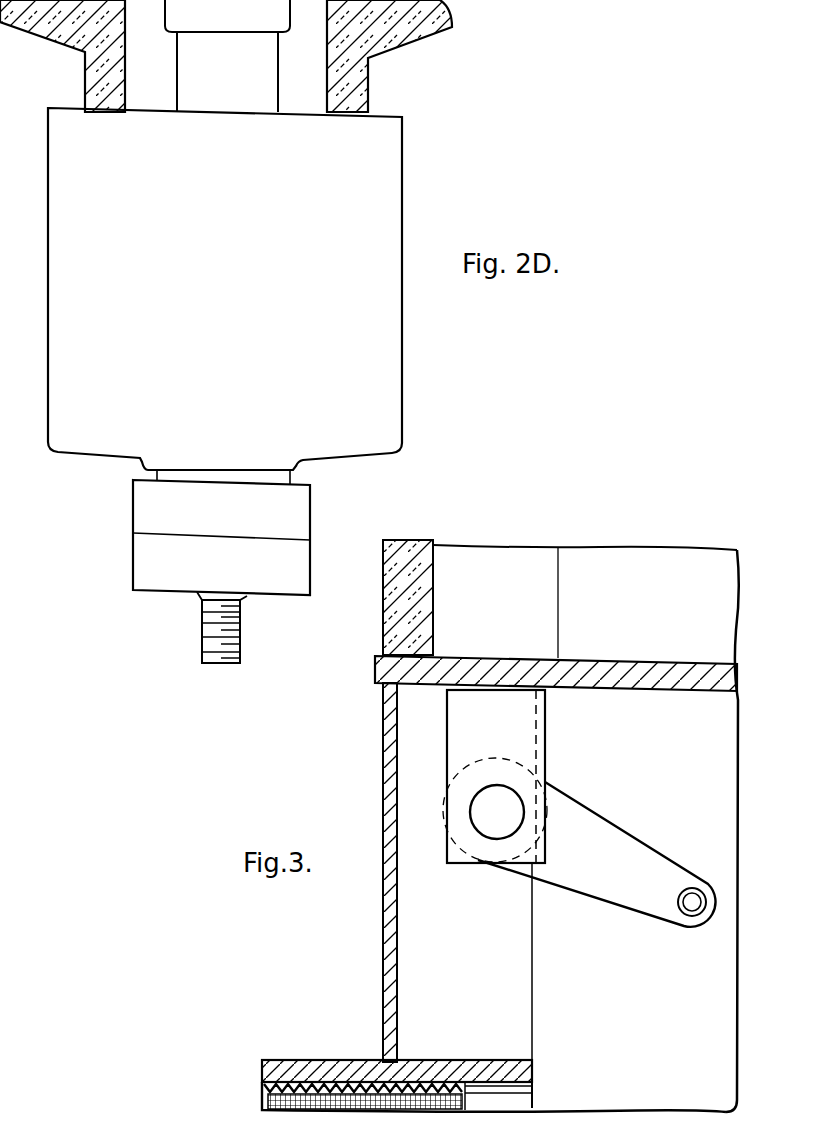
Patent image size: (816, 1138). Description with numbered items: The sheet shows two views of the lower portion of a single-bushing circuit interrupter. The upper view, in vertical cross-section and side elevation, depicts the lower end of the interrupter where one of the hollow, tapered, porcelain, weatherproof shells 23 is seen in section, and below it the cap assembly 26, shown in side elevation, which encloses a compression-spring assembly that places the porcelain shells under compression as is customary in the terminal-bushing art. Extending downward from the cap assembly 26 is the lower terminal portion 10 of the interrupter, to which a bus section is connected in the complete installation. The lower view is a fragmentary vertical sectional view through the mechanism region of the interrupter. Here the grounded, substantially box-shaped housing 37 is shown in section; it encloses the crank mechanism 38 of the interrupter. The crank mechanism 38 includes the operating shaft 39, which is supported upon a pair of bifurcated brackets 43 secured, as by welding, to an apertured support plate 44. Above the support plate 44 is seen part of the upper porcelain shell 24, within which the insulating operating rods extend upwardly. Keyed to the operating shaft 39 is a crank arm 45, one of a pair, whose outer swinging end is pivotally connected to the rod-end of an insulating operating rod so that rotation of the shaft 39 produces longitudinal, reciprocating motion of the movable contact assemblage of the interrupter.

In FIG. 2D, the lower terminal portion 10 is at (240, 642).
In FIG. 2D, the porcelain weatherproof shell 23 is at (453, 28).
In FIG. 2D, the cap assembly 26 is at (403, 177).
In FIG. 3, the porcelain weatherproof shell 24 is at (432, 608).
In FIG. 3, the housing 37 is at (383, 792).
In FIG. 3, the crank mechanism 38 is at (593, 784).
In FIG. 3, the operating shaft 39 is at (500, 790).
In FIG. 3, the bifurcated bracket 43 is at (545, 737).
In FIG. 3, the apertured support plate 44 is at (653, 663).
In FIG. 3, the crank arm 45 is at (632, 840).